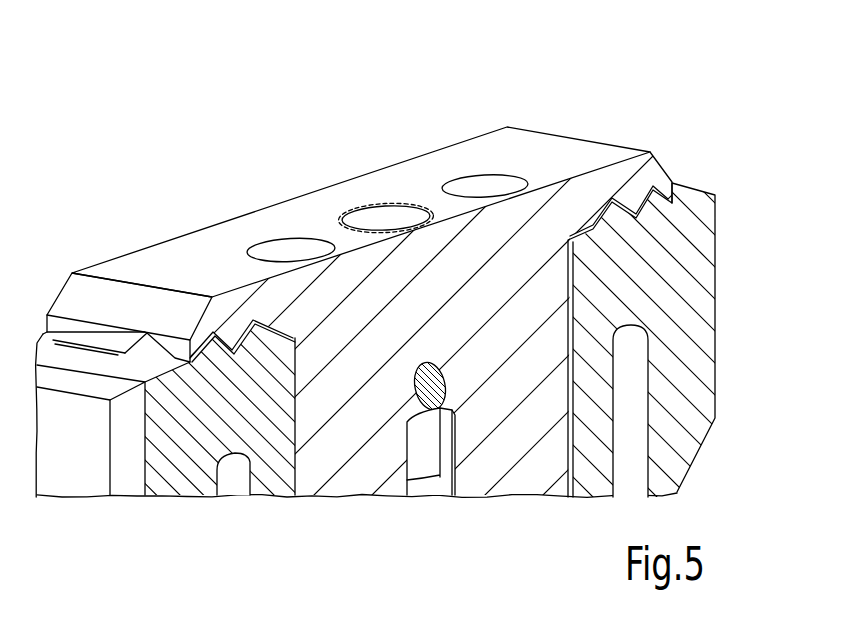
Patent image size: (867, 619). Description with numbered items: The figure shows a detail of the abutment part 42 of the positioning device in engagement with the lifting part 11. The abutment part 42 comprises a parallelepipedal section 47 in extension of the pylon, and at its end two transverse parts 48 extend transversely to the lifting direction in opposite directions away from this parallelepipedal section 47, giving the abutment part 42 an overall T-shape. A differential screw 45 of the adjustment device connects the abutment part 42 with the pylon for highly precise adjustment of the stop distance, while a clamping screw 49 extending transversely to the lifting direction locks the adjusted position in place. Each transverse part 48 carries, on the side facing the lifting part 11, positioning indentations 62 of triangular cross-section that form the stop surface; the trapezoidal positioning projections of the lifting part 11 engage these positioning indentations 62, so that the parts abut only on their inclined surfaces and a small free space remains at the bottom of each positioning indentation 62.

The lifting part 11 is at (703, 287).
The abutment part 42 is at (590, 138).
The differential screw 45 is at (425, 457).
The parallelepipedal section 47 is at (517, 427).
The transverse part 48 is at (150, 270).
The clamping screw 49 is at (430, 362).
The positioning indentation 62 is at (143, 347).